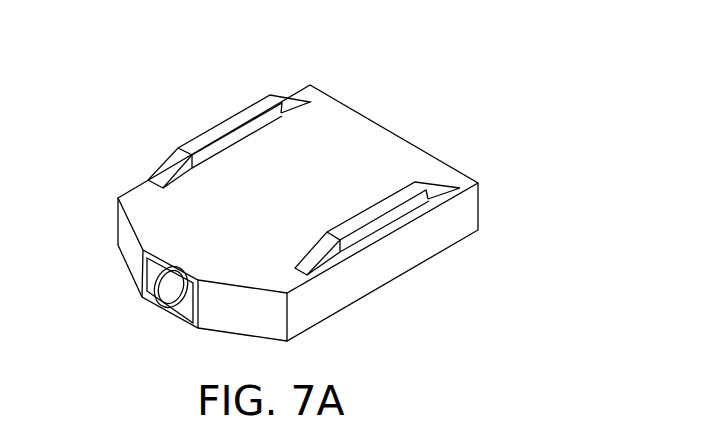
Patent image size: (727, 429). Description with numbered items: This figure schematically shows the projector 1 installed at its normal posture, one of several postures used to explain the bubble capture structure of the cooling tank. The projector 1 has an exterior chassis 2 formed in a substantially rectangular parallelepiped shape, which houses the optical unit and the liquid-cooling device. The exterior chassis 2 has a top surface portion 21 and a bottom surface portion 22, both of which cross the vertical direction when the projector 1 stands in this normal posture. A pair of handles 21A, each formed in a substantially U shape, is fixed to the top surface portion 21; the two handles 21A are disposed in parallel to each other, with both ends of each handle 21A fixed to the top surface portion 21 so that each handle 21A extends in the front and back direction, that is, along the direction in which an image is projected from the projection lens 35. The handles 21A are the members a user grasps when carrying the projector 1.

The projector 1 is at (182, 127).
The exterior chassis 2 is at (397, 150).
The top surface portion 21 is at (345, 132).
The handle 21A is at (238, 117).
The bottom surface portion 22 is at (395, 282).
The projection lens 35 is at (163, 292).